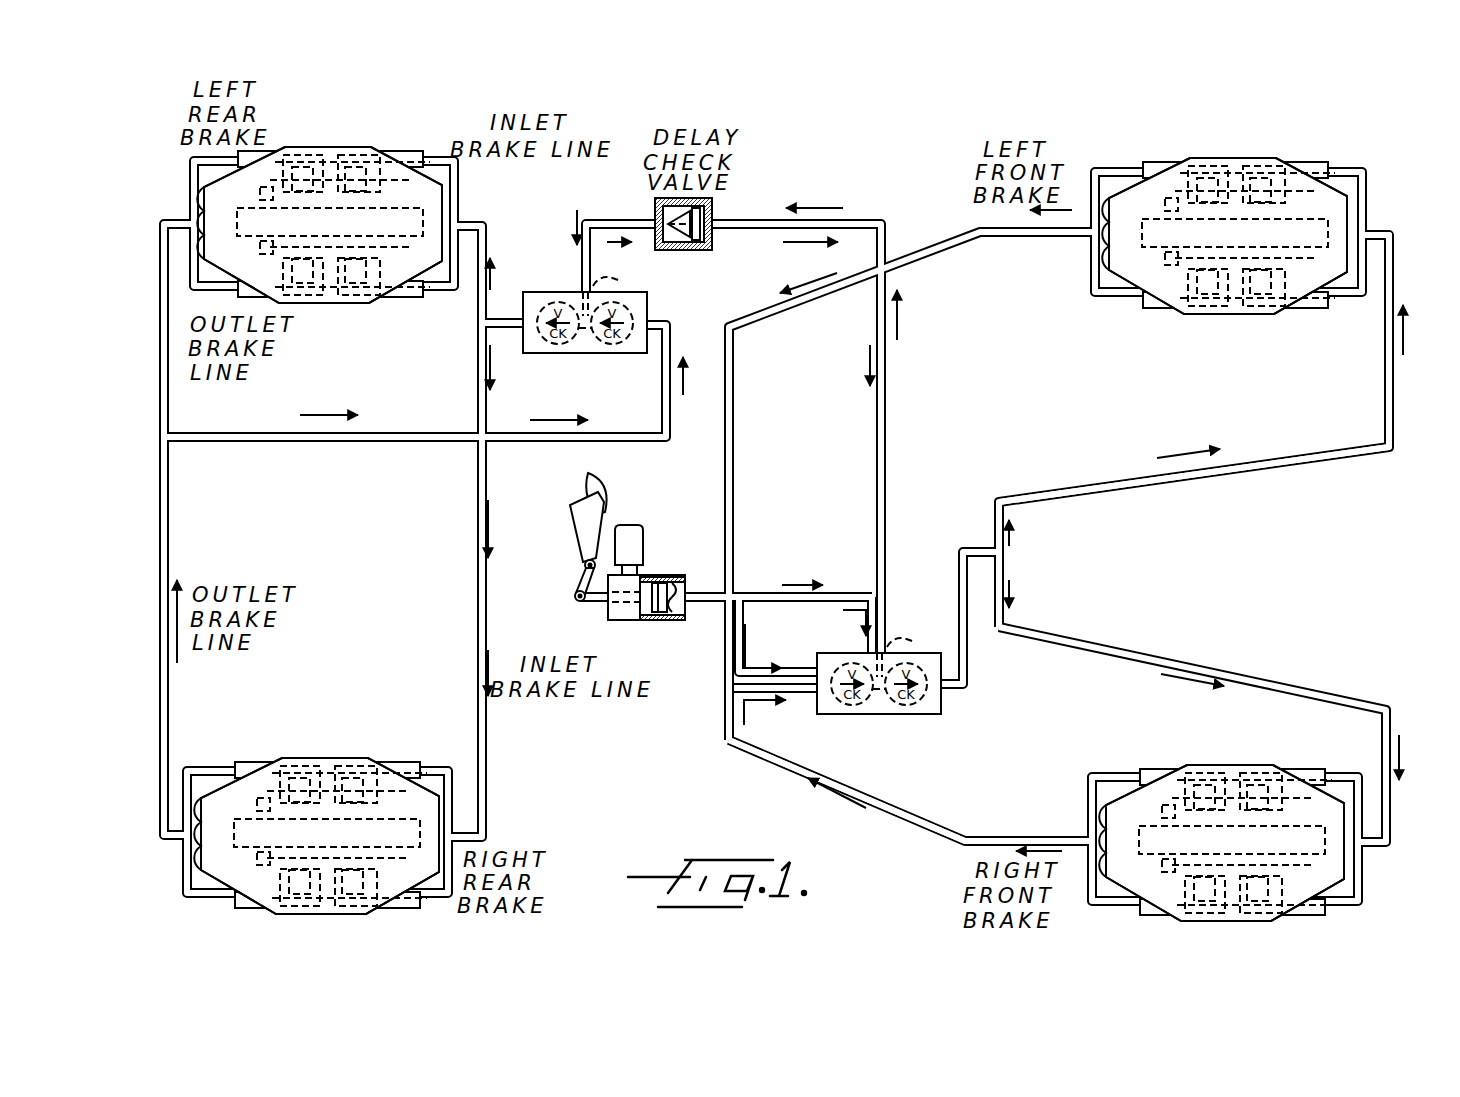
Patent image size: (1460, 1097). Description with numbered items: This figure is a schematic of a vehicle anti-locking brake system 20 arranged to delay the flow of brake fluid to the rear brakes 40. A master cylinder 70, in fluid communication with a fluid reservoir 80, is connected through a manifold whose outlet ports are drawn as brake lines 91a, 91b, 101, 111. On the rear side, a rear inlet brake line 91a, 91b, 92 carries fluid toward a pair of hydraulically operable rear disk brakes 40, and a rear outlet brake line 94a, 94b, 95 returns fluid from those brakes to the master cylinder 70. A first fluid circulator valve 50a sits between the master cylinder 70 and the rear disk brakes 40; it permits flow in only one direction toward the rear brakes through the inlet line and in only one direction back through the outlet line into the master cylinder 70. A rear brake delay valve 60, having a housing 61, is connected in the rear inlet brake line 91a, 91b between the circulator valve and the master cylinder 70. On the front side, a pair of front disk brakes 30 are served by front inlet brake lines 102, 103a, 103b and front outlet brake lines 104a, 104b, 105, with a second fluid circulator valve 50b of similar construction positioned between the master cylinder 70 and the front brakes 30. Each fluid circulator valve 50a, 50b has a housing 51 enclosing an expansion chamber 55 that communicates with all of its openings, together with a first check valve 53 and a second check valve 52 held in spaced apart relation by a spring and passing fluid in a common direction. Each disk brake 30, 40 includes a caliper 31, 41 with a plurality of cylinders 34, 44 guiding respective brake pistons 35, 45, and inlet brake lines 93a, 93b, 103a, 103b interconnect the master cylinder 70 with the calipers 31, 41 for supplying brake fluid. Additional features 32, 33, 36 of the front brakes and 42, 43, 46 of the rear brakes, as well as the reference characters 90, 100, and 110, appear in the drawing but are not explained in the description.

The vehicle anti-locking brake system 20 is at (1393, 129).
The front disk brakes 30 is at (1388, 196).
The caliper 31 is at (1306, 164).
The front brake pad 32 is at (1331, 232).
The front pad retainer 33 is at (1173, 210).
The cylinders 34 is at (1194, 157).
The brake pistons 35 is at (1203, 160).
The front caliper edge 36 is at (1306, 284).
The rear disk brakes 40 is at (178, 183).
The caliper 41 is at (398, 154).
The rear brake pad 42 is at (258, 222).
The rear pad retainer 43 is at (270, 194).
The cylinders 44 is at (285, 152).
The brake pistons 45 is at (328, 150).
The rear caliper edge 46 is at (426, 282).
The first fluid circulator valve 50a is at (562, 291).
The second fluid circulator valve 50b is at (906, 649).
The housing 51 is at (646, 305).
The second check valve 52 is at (581, 346).
The first check valve 53 is at (629, 350).
The expansion chamber 55 is at (592, 312).
The rear brake delay valve 60 is at (742, 187).
The housing 61 is at (712, 210).
The master cylinder 70 is at (689, 549).
The fluid reservoir 80 is at (651, 497).
The rear brake circuit 90 is at (302, 520).
The rear inlet brake line 91a is at (888, 411).
The rear inlet brake line 91b is at (620, 218).
The rear inlet brake line 92 is at (523, 332).
The inlet brake line 93a is at (488, 462).
The inlet brake line 93b is at (492, 242).
The rear outlet brake line 94a is at (172, 540).
The rear outlet brake line 94b is at (170, 378).
The rear outlet brake line 95 is at (410, 440).
The front brake circuit 100 is at (1160, 549).
The brake line 101 is at (882, 618).
The front inlet brake line 102 is at (970, 688).
The front inlet brake line 103a is at (1180, 660).
The front inlet brake line 103b is at (1180, 474).
The front outlet brake line 104a is at (916, 822).
The front outlet brake line 104b is at (746, 412).
The front outlet brake line 105 is at (797, 694).
The brake line 110 is at (839, 565).
The brake line 111 is at (766, 592).